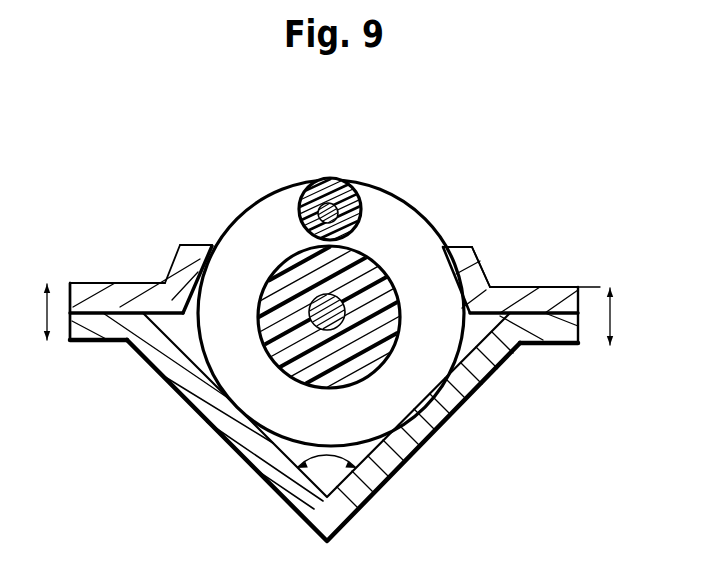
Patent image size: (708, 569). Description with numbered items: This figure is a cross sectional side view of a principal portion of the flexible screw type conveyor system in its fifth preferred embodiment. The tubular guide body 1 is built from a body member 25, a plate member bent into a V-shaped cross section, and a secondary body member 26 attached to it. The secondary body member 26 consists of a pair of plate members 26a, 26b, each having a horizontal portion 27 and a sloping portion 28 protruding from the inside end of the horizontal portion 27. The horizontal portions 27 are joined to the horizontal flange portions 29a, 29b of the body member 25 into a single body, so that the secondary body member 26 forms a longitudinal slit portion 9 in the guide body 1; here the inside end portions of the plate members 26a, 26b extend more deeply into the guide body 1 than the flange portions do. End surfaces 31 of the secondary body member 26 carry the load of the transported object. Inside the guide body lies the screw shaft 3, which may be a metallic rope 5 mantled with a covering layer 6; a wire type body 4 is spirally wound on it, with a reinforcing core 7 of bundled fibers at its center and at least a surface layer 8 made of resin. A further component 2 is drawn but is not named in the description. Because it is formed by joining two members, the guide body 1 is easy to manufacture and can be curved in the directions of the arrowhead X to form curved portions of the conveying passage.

The tubular guide body 1 is at (560, 247).
The annular space 2 is at (248, 400).
The screw shaft 3 is at (297, 383).
The wire type body 4 is at (358, 191).
The metallic rope 5 is at (338, 330).
The covering layer 6 is at (366, 379).
The reinforcing core 7 is at (331, 196).
The surface layer 8 is at (361, 221).
The longitudinal slit portion 9 is at (419, 255).
The body member 25 is at (423, 451).
The secondary body member 26 is at (484, 249).
The plate member 26a is at (114, 277).
The plate member 26b is at (558, 284).
The horizontal portion 27 is at (92, 283).
The sloping portion 28 is at (168, 272).
The horizontal flange portion 29a is at (103, 341).
The horizontal flange portion 29b is at (541, 345).
The end surfaces 31 is at (200, 244).
The arrowhead X is at (329, 314).